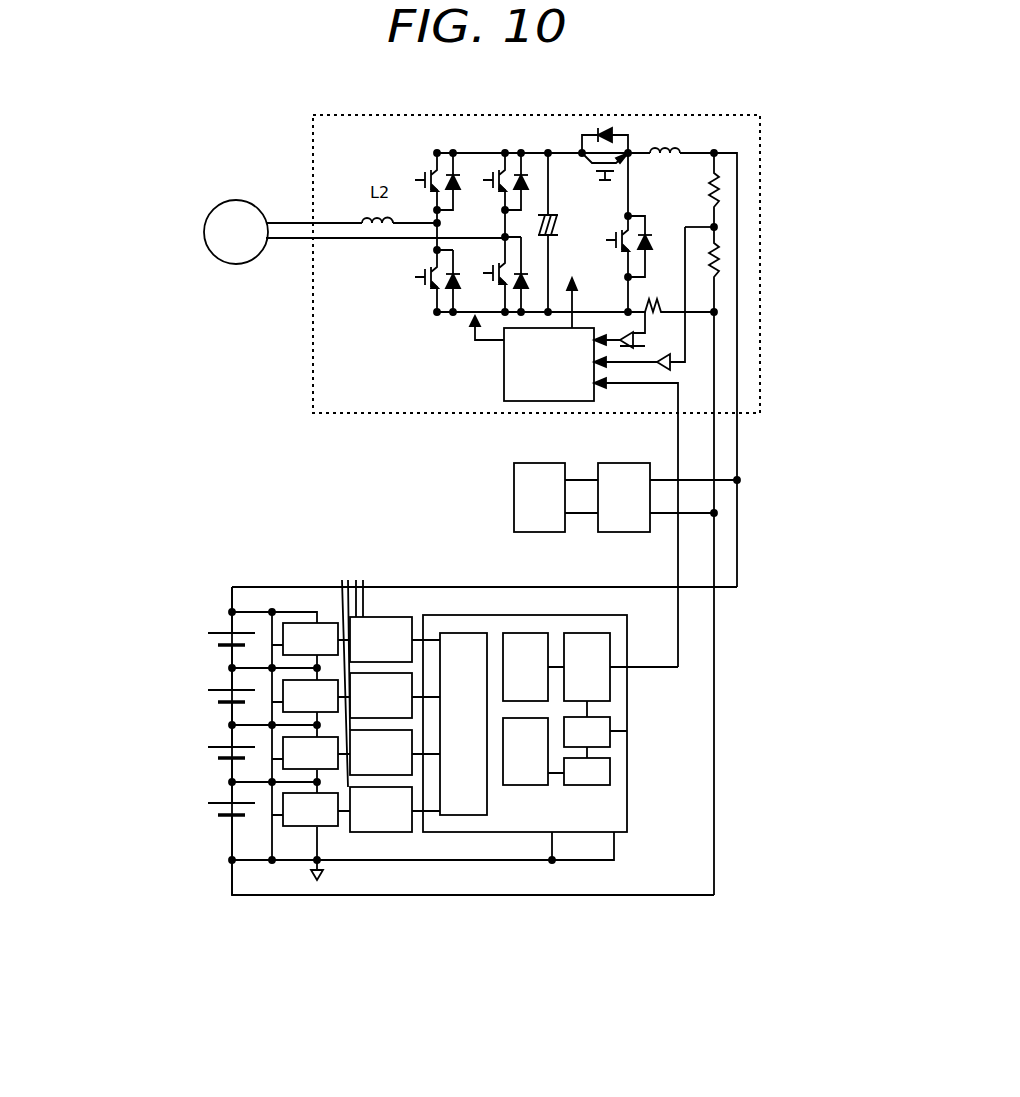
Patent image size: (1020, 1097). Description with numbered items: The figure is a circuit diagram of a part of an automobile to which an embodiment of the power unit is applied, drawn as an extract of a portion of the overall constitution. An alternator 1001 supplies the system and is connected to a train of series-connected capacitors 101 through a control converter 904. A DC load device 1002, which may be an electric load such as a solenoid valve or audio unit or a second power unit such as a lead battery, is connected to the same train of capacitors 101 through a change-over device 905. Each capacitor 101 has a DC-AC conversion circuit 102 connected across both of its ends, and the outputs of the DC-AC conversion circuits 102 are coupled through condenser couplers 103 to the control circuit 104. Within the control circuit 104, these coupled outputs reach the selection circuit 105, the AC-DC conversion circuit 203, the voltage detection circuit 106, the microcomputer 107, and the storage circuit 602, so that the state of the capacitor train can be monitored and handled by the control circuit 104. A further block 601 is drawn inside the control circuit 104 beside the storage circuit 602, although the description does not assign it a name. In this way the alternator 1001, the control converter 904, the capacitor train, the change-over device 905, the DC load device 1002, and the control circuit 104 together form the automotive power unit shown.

The alternator 1001 is at (214, 263).
The control converter 904 is at (313, 377).
The change-over device 905 is at (608, 433).
The DC load device 1002 is at (514, 510).
The capacitor 101 is at (213, 644).
The DC-AC conversion circuit 102 is at (118, 710).
The condenser coupler 103 is at (348, 683).
The control circuit 104 is at (628, 784).
The selection circuit 105 is at (412, 898).
The storage circuit 602 is at (723, 615).
The microcomputer circuit 601 is at (587, 667).
The microcomputer 107 is at (587, 732).
The AC-DC conversion circuit 203 is at (500, 903).
The voltage detection circuit 106 is at (650, 908).